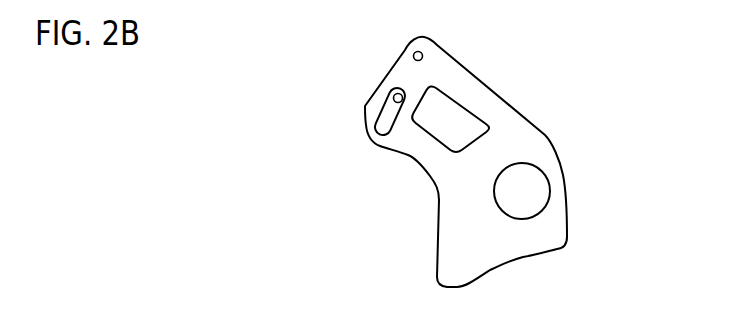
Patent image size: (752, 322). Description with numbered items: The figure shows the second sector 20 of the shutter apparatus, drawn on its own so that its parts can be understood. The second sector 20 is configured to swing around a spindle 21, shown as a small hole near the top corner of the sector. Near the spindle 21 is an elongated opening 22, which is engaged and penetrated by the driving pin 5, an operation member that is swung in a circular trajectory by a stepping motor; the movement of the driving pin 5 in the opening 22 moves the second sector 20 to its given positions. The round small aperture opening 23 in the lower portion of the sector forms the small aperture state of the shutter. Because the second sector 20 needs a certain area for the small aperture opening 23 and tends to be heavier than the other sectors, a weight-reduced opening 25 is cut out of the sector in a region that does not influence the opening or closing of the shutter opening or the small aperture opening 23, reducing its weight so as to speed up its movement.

The second sector 20 is at (508, 118).
The weight-reduced opening 25 is at (443, 110).
The opening 22 is at (386, 114).
The driving pin 5 is at (395, 96).
The spindle 21 is at (415, 53).
The small aperture opening 23 is at (533, 192).